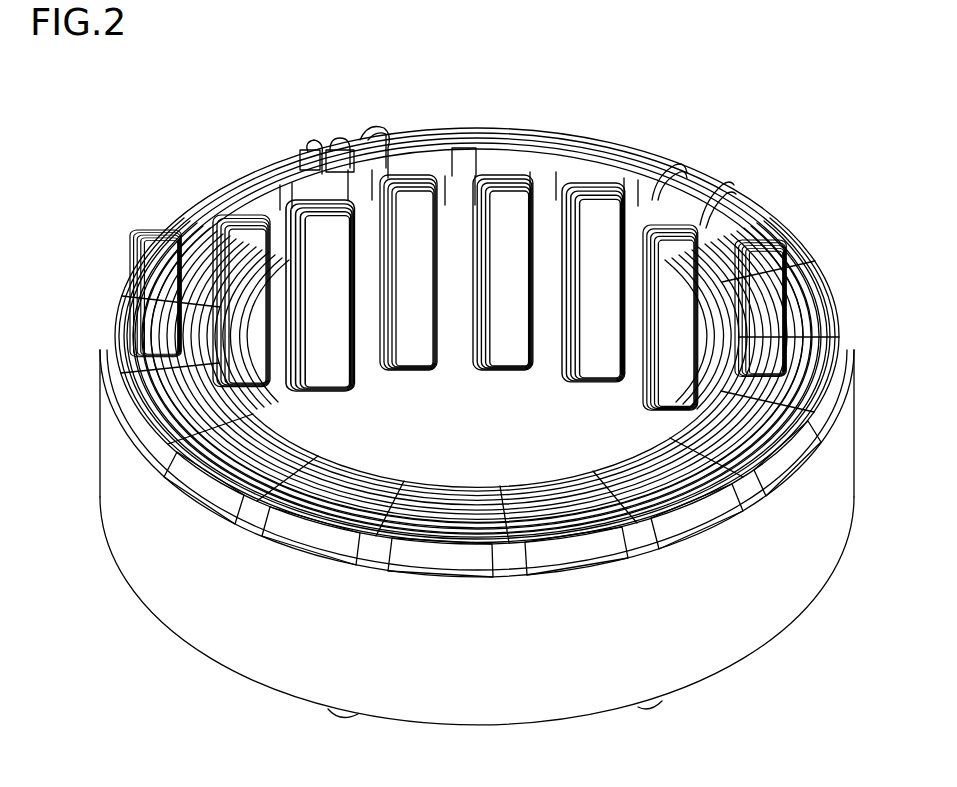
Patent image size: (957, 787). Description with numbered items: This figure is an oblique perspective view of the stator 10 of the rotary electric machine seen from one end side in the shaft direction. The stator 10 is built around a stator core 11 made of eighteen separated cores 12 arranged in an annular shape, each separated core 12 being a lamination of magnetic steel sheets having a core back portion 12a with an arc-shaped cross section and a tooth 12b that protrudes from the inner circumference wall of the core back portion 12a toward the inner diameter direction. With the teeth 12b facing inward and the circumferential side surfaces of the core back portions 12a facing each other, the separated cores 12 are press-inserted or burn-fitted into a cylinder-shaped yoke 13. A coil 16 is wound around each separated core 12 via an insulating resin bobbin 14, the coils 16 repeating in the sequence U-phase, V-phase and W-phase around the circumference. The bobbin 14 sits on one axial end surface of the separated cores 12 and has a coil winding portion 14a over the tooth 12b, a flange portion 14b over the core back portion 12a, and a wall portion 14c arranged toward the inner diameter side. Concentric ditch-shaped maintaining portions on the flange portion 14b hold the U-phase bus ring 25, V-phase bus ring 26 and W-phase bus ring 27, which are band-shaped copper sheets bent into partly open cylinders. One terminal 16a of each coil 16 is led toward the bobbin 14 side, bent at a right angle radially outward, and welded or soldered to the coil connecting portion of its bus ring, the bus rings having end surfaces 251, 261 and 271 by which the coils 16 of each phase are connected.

The stator 10 is at (145, 147).
The stator core 11 is at (476, 134).
The separated core 12 is at (538, 420).
The core back portion 12a is at (460, 345).
The tooth 12b is at (498, 342).
The yoke 13 is at (148, 582).
The bobbin 14 is at (614, 131).
The coil winding portion 14a is at (568, 148).
The flange portion 14b is at (652, 150).
The wall portion 14c is at (598, 148).
The coil 16 is at (666, 164).
The terminal 16a is at (728, 182).
The U-phase bus ring 25 is at (364, 146).
The end surface 251 is at (352, 146).
The V-phase bus ring 26 is at (340, 150).
The end surface 261 is at (332, 148).
The W-phase bus ring 27 is at (316, 150).
The end surface 271 is at (300, 152).